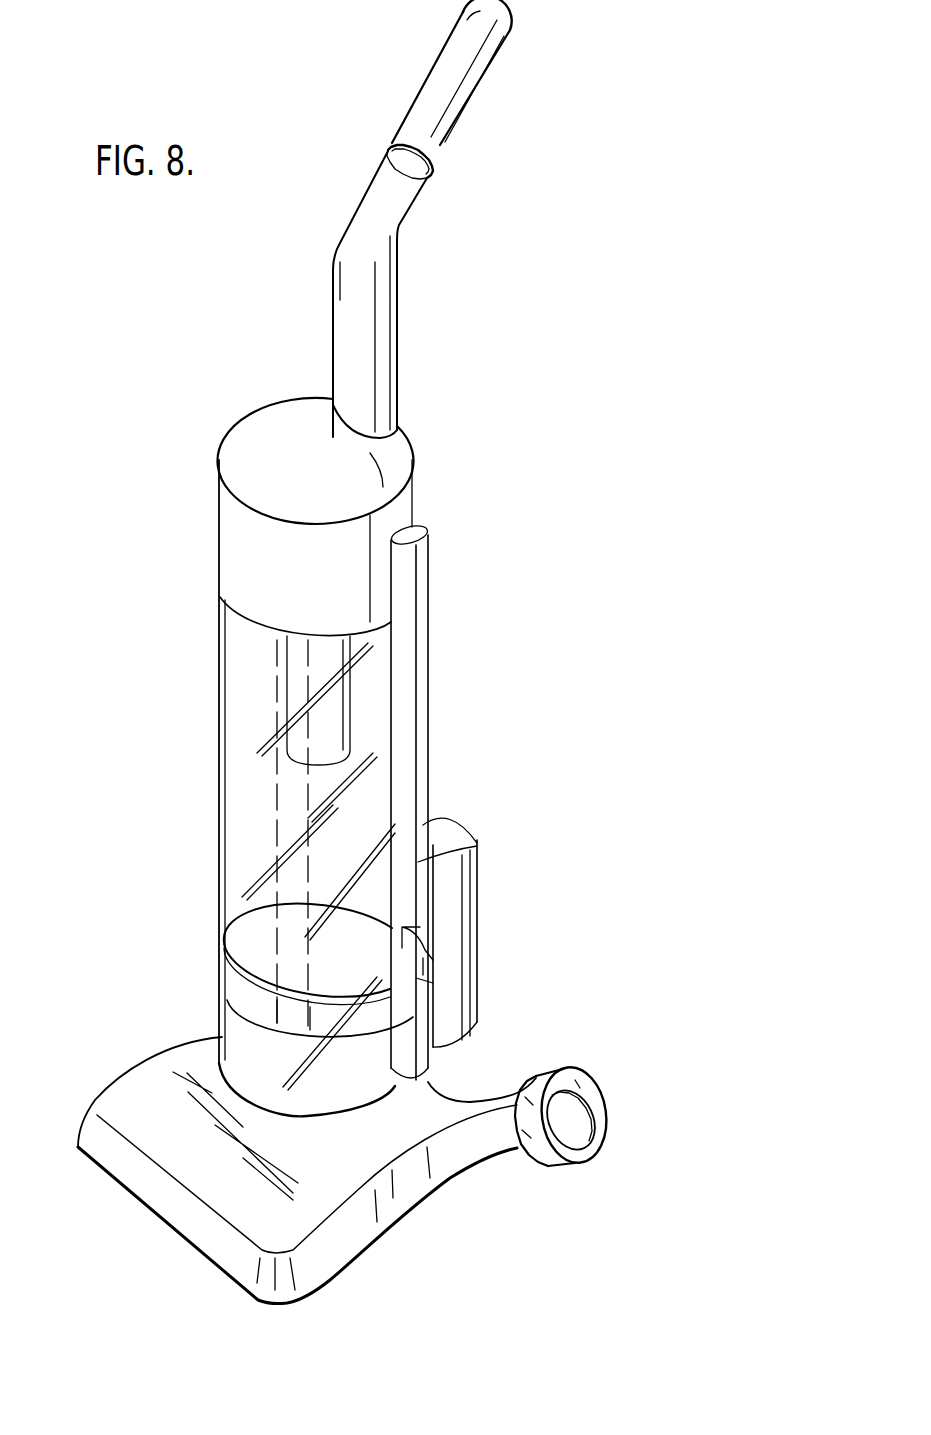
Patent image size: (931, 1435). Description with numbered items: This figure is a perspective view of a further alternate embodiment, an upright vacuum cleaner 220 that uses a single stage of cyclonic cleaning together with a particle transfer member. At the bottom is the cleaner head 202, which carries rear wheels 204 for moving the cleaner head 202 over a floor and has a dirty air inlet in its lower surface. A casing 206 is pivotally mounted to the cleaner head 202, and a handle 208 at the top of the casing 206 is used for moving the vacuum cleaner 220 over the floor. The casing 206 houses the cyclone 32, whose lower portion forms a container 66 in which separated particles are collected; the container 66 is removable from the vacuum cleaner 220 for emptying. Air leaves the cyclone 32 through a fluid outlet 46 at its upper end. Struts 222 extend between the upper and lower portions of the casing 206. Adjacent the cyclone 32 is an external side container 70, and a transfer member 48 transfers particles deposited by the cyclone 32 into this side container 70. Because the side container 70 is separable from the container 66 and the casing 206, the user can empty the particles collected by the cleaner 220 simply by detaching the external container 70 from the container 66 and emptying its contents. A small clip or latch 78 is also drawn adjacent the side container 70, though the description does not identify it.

The handle 208 is at (482, 88).
The vacuum cleaner 220 is at (507, 333).
The casing 206 is at (220, 524).
The struts 222 is at (283, 703).
The fluid outlet 46 is at (290, 745).
The first stage cyclone 32 is at (230, 805).
The container 66 is at (221, 857).
The transfer member 48 is at (242, 925).
The latch 78 is at (432, 948).
The external container 70 is at (478, 960).
The cleaner head 202 is at (106, 1066).
The rear wheels 204 is at (570, 1068).